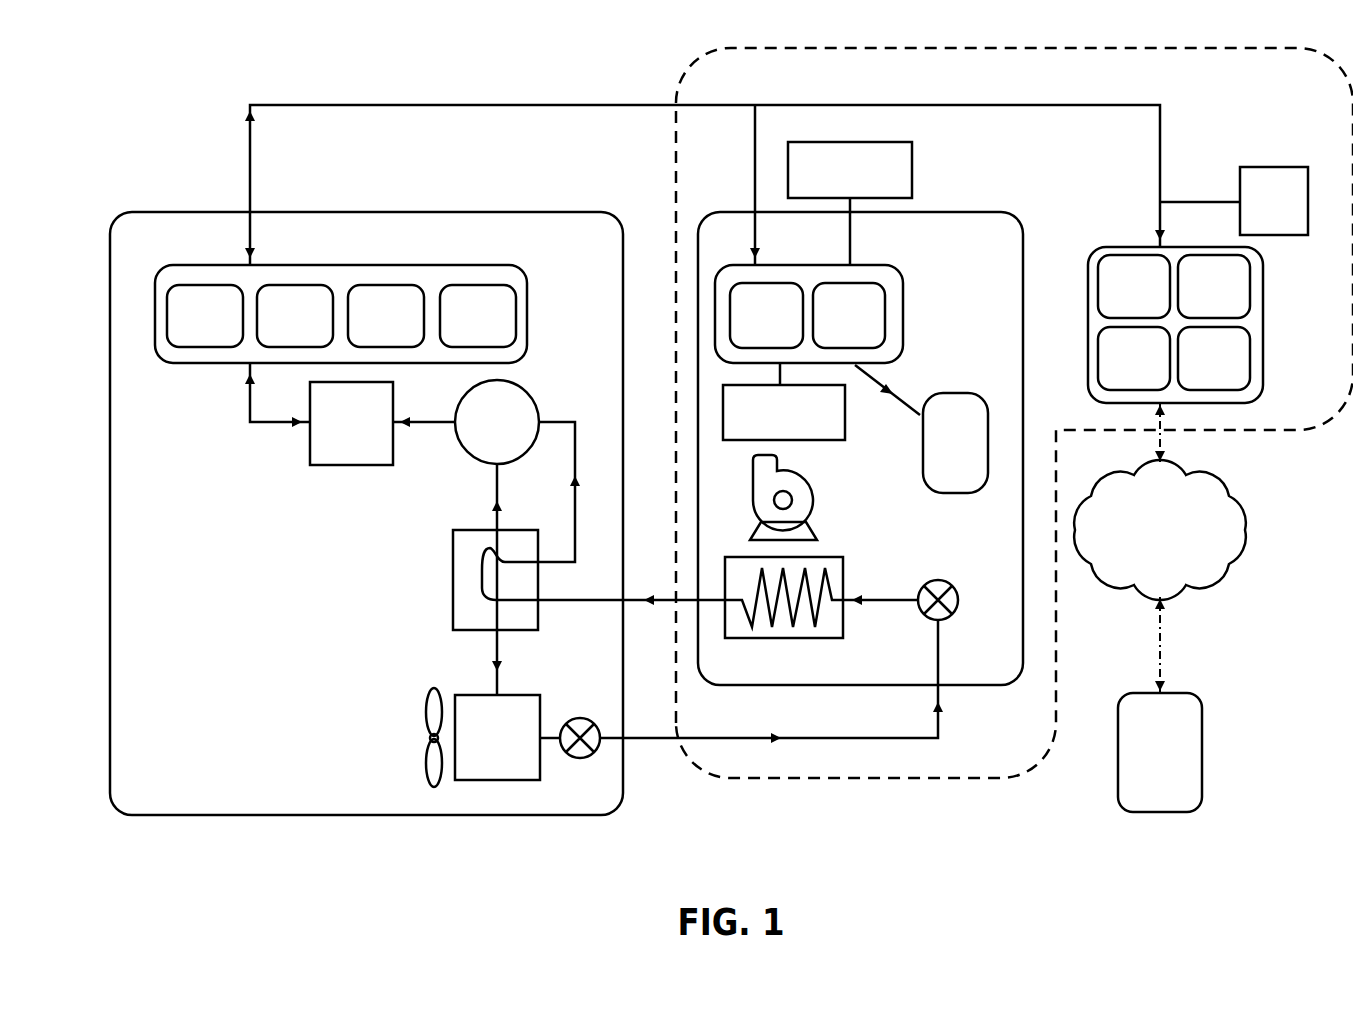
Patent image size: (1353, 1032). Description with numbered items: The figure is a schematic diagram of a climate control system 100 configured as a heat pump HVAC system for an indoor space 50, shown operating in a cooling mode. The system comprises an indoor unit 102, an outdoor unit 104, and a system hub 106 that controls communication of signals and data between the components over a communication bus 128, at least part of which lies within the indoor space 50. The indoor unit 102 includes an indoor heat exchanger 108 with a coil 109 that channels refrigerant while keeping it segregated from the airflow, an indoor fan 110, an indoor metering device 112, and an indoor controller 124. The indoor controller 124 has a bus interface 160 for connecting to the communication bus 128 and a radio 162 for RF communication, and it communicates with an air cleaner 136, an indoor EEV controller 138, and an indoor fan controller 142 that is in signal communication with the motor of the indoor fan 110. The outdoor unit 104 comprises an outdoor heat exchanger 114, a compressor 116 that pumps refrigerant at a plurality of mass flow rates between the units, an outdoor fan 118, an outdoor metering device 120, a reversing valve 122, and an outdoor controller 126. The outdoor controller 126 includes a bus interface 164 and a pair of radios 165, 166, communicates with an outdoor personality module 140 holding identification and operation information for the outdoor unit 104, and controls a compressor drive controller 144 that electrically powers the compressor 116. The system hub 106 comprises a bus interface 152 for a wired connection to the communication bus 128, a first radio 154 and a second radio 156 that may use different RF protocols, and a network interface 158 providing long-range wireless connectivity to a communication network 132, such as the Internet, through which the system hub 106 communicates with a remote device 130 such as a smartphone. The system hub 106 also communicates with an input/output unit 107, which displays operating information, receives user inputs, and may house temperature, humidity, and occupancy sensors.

The indoor space 50 is at (719, 46).
The climate control system 100 is at (214, 101).
The indoor unit 102 is at (950, 212).
The outdoor unit 104 is at (490, 212).
The system hub 106 is at (1118, 245).
The input/output unit 107 is at (1259, 211).
The indoor heat exchanger 108 is at (775, 642).
The coil 109 is at (822, 620).
The indoor fan 110 is at (816, 487).
The indoor metering device 112 is at (938, 580).
The outdoor heat exchanger 114 is at (482, 748).
The compressor 116 is at (482, 432).
The outdoor fan 118 is at (426, 737).
The outdoor metering device 120 is at (581, 718).
The reversing valve 122 is at (452, 581).
The indoor controller 124 is at (868, 262).
The outdoor controller 126 is at (530, 295).
The communication bus 128 is at (385, 105).
The remote device 130 is at (1145, 762).
The communication network 132 is at (1145, 540).
The air cleaner 136 is at (835, 180).
The indoor EEV controller 138 is at (940, 453).
The outdoor personality module 140 is at (190, 326).
The indoor fan controller 142 is at (769, 422).
The compressor drive controller 144 is at (336, 432).
The bus interface 152 is at (1119, 297).
The first radio 154 is at (1199, 297).
The second radio 156 is at (1119, 369).
The network interface 158 is at (1199, 369).
The bus interface 160 is at (751, 326).
The radio 162 is at (834, 326).
The bus interface 164 is at (280, 326).
The radio 165 is at (371, 326).
The radio 166 is at (463, 326).